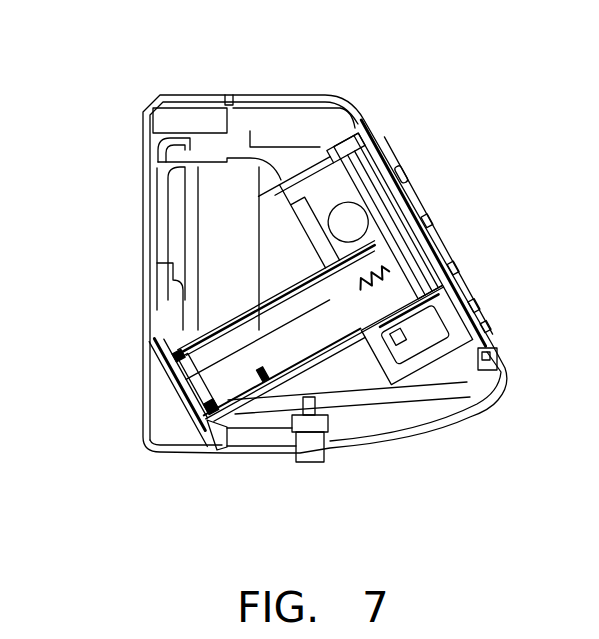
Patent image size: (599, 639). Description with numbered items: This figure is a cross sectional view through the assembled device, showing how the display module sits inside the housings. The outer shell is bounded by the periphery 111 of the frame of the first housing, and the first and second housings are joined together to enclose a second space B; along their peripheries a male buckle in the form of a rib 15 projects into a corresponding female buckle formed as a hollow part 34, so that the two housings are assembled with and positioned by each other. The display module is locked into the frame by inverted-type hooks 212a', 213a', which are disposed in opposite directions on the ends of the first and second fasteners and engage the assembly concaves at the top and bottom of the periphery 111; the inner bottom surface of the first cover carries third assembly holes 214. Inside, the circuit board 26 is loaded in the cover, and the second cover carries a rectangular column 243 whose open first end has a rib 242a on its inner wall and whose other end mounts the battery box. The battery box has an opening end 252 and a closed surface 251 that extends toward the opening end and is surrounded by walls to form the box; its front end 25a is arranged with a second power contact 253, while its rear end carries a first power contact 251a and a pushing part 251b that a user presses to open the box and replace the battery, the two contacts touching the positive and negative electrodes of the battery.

The periphery 111 is at (362, 115).
The third assembly holes 214 is at (366, 128).
The rib 15 is at (237, 100).
The hollow part 34 is at (228, 94).
The hook 212a' is at (310, 128).
The second space B is at (205, 205).
The rectangular column 243 is at (258, 300).
The circuit board 26 is at (368, 180).
The rib 242a is at (422, 200).
The opening end 252 is at (275, 295).
The front end 25a is at (378, 268).
The second power contact 253 is at (388, 296).
The closed surface 251 is at (258, 400).
The pushing part 251b is at (165, 350).
The first power contact 251a is at (168, 372).
The hook 213a' is at (365, 416).